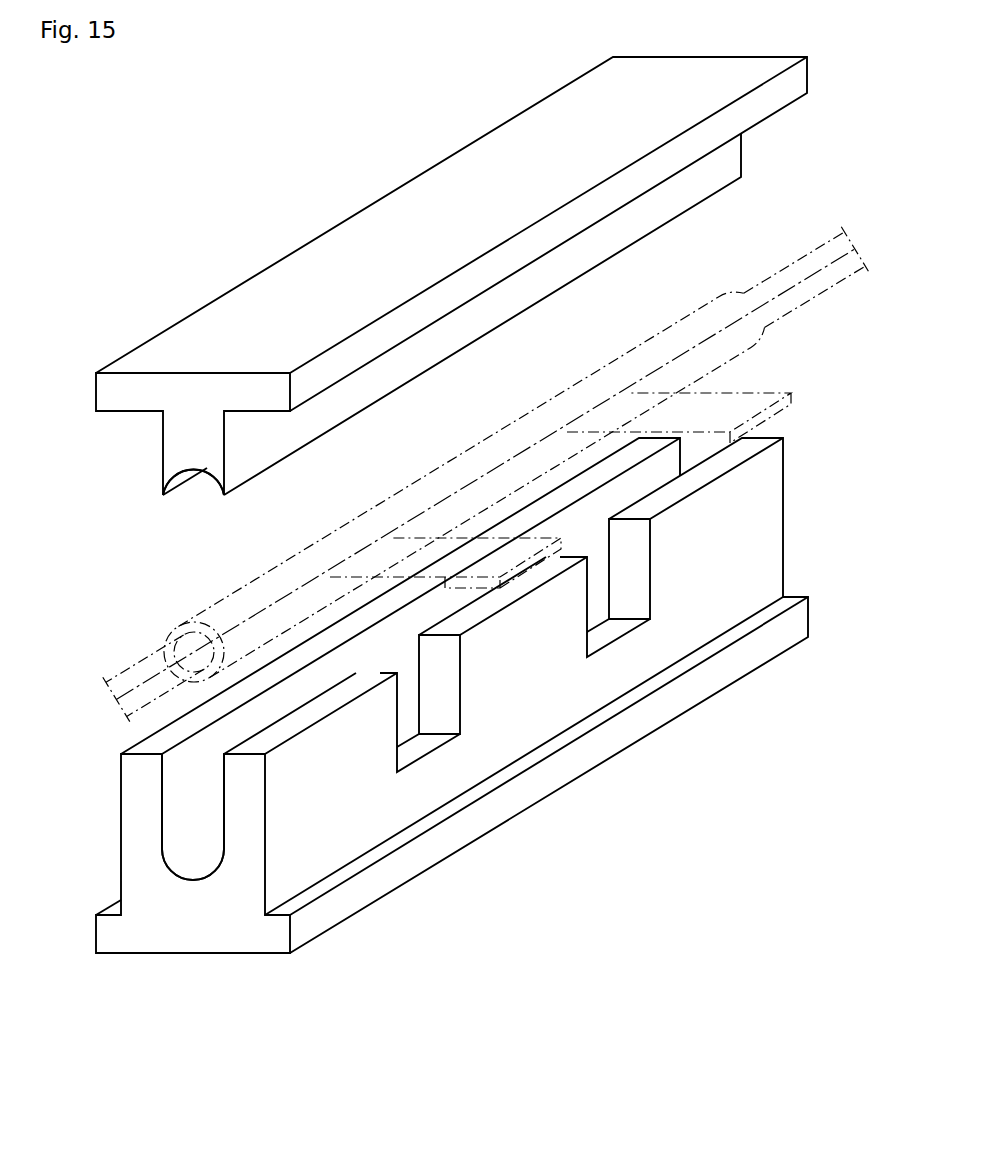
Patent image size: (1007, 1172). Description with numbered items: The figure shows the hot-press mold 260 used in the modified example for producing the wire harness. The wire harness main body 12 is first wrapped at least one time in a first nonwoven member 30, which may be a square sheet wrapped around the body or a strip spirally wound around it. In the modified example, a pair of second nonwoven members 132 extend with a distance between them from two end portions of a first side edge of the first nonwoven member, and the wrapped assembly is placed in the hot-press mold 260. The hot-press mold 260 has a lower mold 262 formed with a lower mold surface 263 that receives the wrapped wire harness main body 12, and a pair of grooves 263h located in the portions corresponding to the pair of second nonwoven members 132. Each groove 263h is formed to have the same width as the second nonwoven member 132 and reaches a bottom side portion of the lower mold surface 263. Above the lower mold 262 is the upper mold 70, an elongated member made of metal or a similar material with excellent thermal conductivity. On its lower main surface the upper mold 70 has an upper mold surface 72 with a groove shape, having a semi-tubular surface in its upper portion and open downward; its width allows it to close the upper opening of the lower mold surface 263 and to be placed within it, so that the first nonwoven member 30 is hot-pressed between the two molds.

The wire harness main body 12 is at (788, 268).
The first nonwoven member 30 is at (441, 465).
The upper mold 70 is at (343, 240).
The upper mold surface 72 is at (187, 470).
The second nonwoven member 132 is at (467, 578).
The hot-press mold 260 is at (411, 139).
The lower mold 262 is at (492, 834).
The lower mold surface 263 is at (202, 856).
The grooves 263h is at (448, 720).